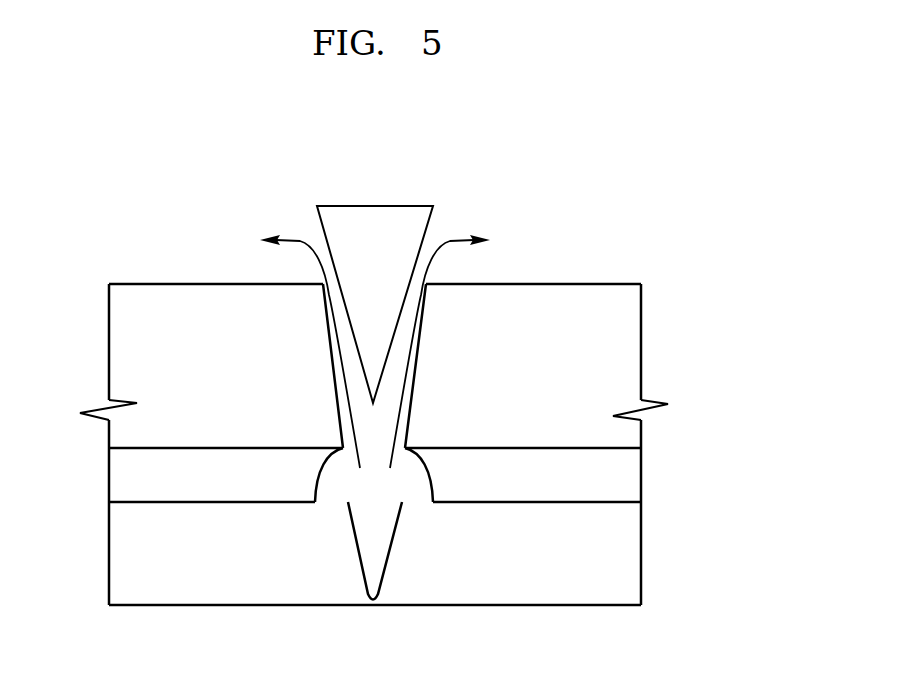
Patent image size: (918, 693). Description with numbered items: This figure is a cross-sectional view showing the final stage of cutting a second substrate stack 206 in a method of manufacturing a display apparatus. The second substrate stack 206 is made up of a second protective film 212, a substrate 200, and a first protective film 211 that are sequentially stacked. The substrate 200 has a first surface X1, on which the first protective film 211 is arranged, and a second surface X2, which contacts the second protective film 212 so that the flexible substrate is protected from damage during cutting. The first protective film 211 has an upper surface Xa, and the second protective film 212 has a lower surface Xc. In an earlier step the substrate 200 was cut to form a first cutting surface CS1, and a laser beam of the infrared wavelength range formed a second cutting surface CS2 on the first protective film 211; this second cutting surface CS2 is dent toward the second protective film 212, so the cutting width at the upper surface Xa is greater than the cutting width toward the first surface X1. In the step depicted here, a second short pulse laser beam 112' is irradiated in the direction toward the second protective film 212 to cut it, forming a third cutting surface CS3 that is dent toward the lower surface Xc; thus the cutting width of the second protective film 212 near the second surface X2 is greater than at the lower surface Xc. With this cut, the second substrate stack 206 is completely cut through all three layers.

The second short pulse laser beam 112' is at (375, 263).
The second substrate stack 206 is at (422, 445).
The first protective film 211 is at (400, 344).
The substrate 200 is at (391, 547).
The second protective film 212 is at (400, 586).
The upper surface Xa is at (148, 284).
The first surface X1 is at (135, 448).
The second surface X2 is at (135, 502).
The lower surface Xc is at (148, 605).
The first cutting surface CS1 is at (428, 472).
The second cutting surface CS2 is at (418, 365).
The third cutting surface CS3 is at (393, 550).